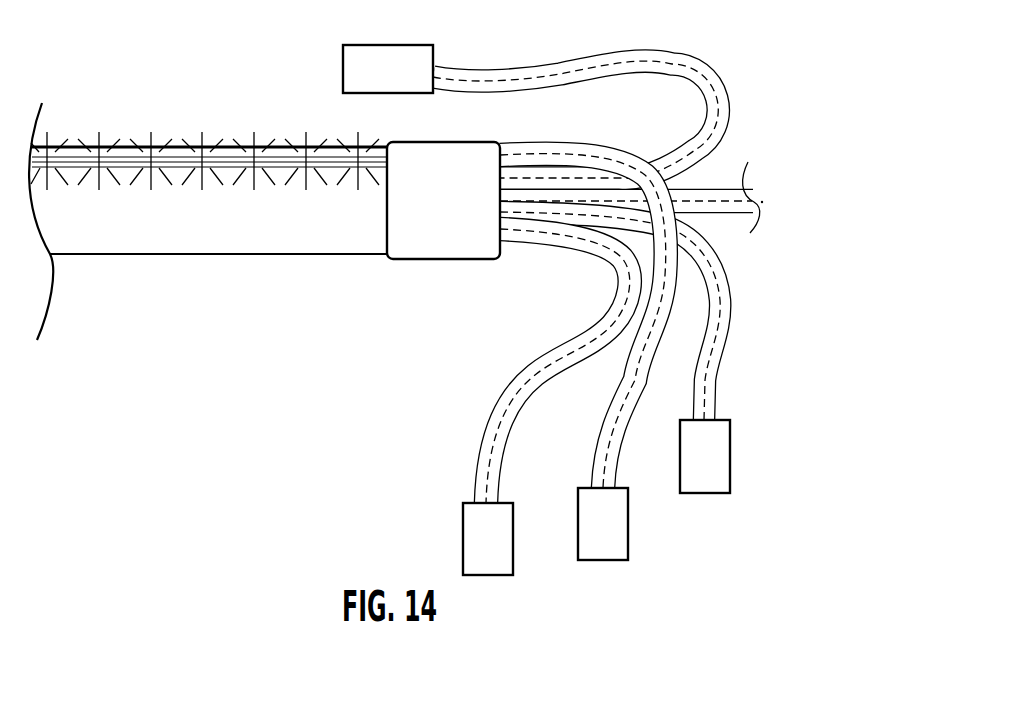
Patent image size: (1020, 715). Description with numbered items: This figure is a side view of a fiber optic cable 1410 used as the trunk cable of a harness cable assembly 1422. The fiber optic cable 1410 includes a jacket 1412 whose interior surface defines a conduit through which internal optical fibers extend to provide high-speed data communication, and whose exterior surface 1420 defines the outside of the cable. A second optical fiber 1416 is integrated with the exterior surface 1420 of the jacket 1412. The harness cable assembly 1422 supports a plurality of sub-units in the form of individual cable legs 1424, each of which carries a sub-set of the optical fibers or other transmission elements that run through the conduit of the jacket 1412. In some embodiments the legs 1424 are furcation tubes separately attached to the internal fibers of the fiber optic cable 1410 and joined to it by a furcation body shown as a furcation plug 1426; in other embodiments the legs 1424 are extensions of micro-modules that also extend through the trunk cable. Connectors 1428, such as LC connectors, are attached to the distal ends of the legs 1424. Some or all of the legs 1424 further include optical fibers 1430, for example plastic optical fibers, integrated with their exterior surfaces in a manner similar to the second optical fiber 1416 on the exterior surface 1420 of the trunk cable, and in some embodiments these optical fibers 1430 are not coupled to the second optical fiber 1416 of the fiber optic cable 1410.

The fiber optic cable 1410 is at (104, 103).
The jacket 1412 is at (222, 240).
The second optical fiber 1416 is at (180, 165).
The exterior surface 1420 is at (340, 225).
The harness cable assembly 1422 is at (137, 442).
The cable legs 1424 is at (612, 73).
The furcation plug 1426 is at (450, 232).
The connectors 1428 is at (603, 525).
The optical fibers 1430 is at (667, 68).